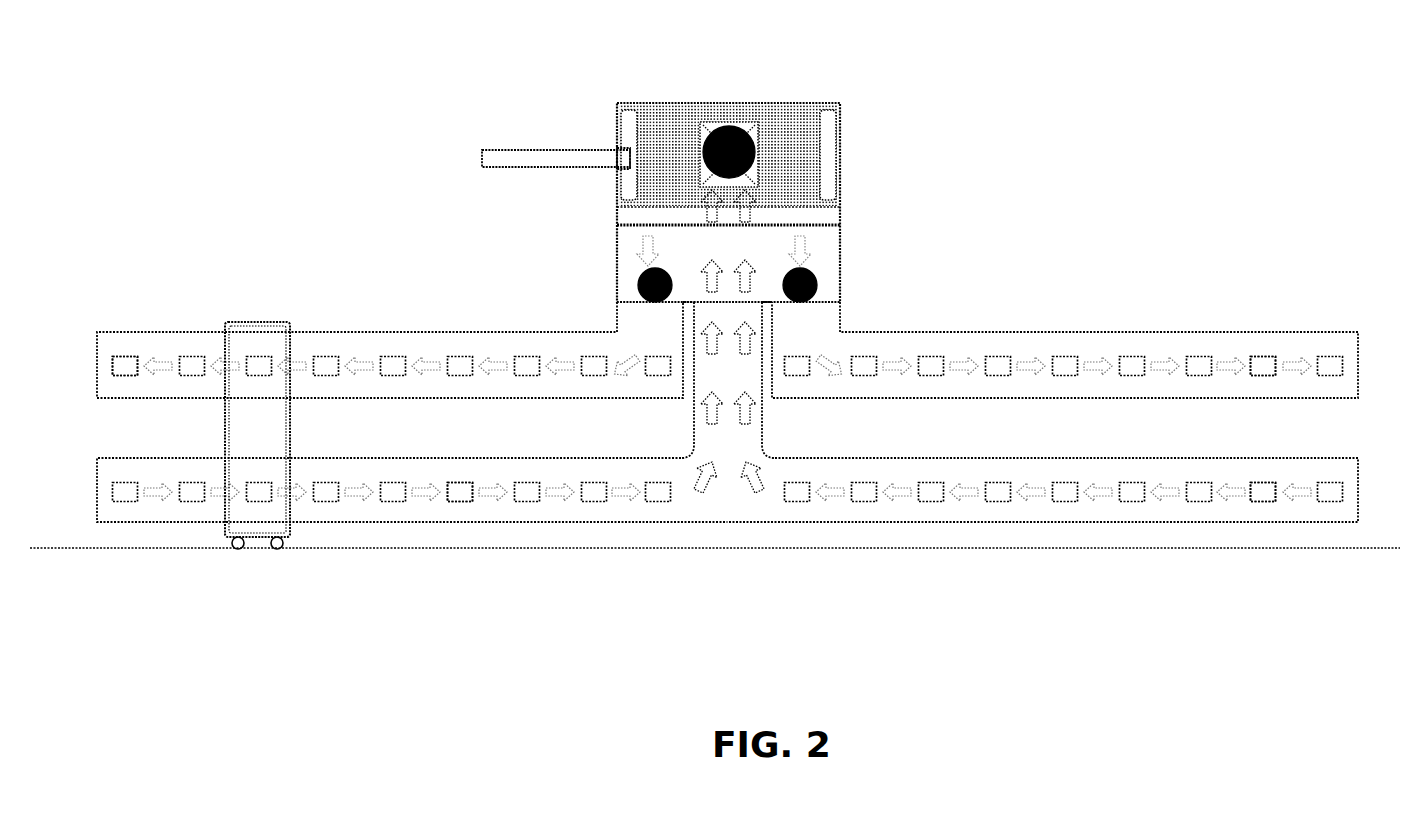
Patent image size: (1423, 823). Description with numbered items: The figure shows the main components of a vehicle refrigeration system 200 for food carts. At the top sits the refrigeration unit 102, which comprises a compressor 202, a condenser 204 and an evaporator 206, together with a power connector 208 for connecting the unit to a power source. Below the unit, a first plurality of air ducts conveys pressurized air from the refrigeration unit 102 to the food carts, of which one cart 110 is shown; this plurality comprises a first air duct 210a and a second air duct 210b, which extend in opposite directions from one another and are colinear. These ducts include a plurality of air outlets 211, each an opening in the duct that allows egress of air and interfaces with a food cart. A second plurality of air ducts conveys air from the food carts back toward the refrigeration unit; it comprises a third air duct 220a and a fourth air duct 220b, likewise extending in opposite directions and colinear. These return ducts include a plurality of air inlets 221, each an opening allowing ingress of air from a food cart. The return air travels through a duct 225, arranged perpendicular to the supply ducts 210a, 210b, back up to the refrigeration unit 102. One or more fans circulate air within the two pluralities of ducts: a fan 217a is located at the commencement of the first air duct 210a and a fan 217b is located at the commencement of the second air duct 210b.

The refrigeration system 200 is at (345, 56).
The refrigeration unit 102 is at (815, 103).
The compressor 202 is at (650, 120).
The condenser 204 is at (735, 120).
The evaporator 206 is at (840, 158).
The power connector 208 is at (530, 152).
The fan 217a is at (632, 287).
The fan 217b is at (823, 270).
The duct 225 is at (735, 385).
The first air duct 210a is at (410, 333).
The second air duct 210b is at (1112, 333).
The air outlets 211 is at (135, 357).
The third air duct 220a is at (386, 458).
The fourth air duct 220b is at (1357, 460).
The air inlets 221 is at (460, 502).
The cart 110 is at (248, 538).